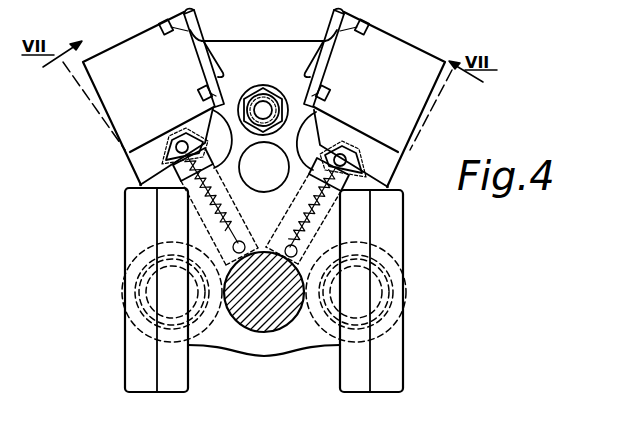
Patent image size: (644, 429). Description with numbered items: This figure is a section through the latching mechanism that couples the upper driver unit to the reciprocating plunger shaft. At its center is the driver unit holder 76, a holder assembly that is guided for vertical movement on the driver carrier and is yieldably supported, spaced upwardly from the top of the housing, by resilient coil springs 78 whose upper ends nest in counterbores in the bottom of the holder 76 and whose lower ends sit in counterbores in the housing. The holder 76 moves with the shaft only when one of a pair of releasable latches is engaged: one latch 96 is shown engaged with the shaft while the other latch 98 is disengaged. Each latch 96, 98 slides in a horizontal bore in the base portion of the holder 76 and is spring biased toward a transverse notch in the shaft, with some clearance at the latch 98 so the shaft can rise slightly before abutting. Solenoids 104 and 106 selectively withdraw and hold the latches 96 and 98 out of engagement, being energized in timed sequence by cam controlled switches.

The driver unit holder 76 is at (403, 292).
The resilient coil springs 78 is at (316, 306).
The latch 96 is at (335, 228).
The latch 98 is at (205, 243).
The solenoid 104 is at (399, 101).
The solenoid 106 is at (164, 94).